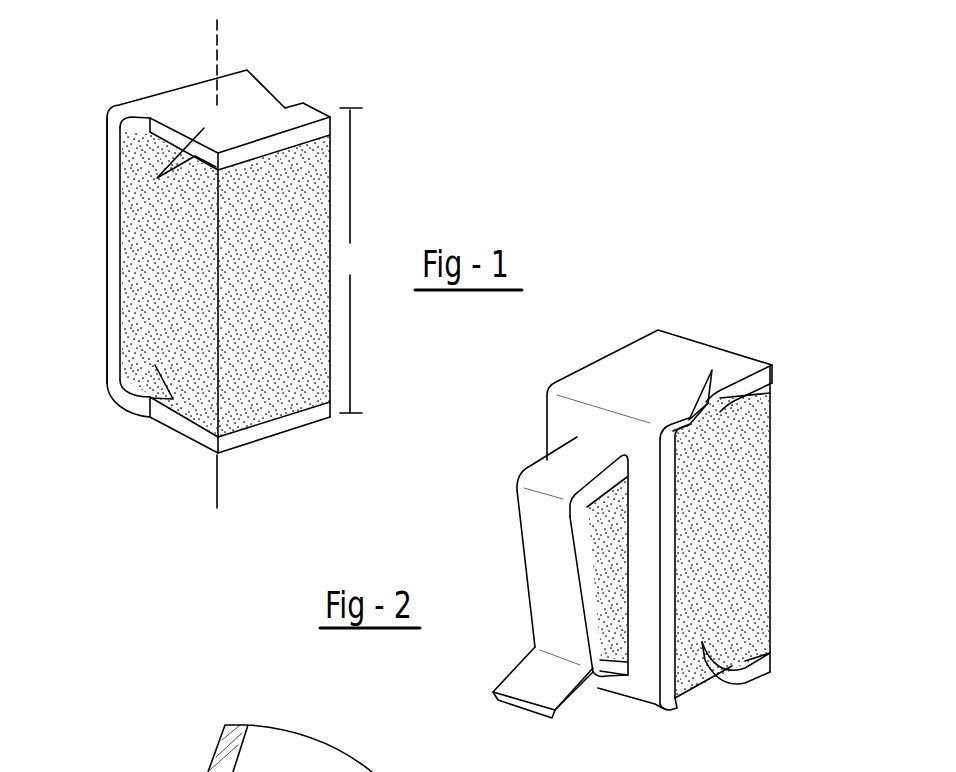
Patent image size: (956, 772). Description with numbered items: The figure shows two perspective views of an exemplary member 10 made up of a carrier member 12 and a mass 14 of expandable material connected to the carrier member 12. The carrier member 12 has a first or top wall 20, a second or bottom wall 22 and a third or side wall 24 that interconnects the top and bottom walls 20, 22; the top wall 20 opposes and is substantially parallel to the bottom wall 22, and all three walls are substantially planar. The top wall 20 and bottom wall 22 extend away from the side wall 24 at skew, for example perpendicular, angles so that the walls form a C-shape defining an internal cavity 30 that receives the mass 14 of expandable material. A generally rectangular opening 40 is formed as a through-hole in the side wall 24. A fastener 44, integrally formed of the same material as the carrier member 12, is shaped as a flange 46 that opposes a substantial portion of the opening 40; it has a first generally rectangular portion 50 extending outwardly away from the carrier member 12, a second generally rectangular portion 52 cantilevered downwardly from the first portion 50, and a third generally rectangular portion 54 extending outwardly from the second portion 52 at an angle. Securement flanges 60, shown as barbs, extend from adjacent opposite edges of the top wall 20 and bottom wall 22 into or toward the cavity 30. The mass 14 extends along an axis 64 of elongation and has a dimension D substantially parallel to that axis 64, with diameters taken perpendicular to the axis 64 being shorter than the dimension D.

In FIG. 1, the member 10 is at (275, 264).
In FIG. 2, the member 10 is at (642, 521).
In FIG. 1, the carrier member 12 is at (204, 275).
In FIG. 2, the carrier member 12 is at (612, 521).
In FIG. 1, the mass of expandable material 14 is at (302, 400).
In FIG. 2, the mass of expandable material 14 is at (760, 605).
In FIG. 1, the first or top wall 20 is at (258, 98).
In FIG. 2, the first or top wall 20 is at (678, 350).
In FIG. 1, the second or bottom wall 22 is at (270, 455).
In FIG. 2, the second or bottom wall 22 is at (760, 665).
In FIG. 1, the third or side wall 24 is at (112, 313).
In FIG. 2, the third or side wall 24 is at (650, 688).
In FIG. 1, the cavity 30 is at (165, 240).
In FIG. 2, the cavity 30 is at (732, 500).
In FIG. 2, the opening 40 is at (607, 540).
In FIG. 2, the fastener 44 is at (511, 593).
In FIG. 2, the flange 46 is at (526, 545).
In FIG. 2, the first generally rectangular portion 50 is at (550, 472).
In FIG. 2, the second generally rectangular portion 52 is at (540, 628).
In FIG. 2, the third generally rectangular portion 54 is at (567, 705).
In FIG. 1, the securement flange 60 is at (160, 172).
In FIG. 2, the securement flange 60 is at (702, 458).
In FIG. 1, the axis of elongation 64 is at (213, 37).
In FIG. 1, the dimension D is at (351, 260).